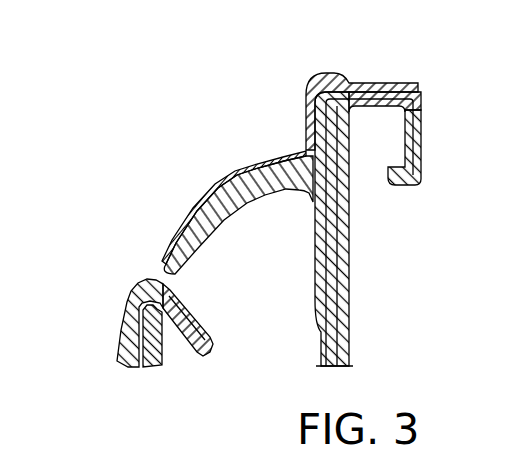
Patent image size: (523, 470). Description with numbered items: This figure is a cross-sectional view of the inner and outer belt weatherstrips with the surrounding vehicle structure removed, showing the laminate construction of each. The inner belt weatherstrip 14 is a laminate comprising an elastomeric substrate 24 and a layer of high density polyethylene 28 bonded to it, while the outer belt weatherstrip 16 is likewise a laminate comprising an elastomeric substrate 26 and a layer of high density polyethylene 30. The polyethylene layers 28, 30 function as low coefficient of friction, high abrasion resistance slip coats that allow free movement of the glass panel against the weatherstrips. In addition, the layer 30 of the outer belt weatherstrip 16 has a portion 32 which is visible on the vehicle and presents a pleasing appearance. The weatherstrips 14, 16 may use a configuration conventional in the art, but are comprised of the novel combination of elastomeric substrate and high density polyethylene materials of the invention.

The inner belt weatherstrip 14 is at (358, 238).
The outer belt weatherstrip 16 is at (112, 313).
The elastomeric substrate 24 is at (250, 198).
The elastomeric substrate 26 is at (145, 302).
The layer of high density polyethylene 28 is at (201, 319).
The layer of high density polyethylene 30 is at (253, 165).
The portion 32 is at (351, 82).